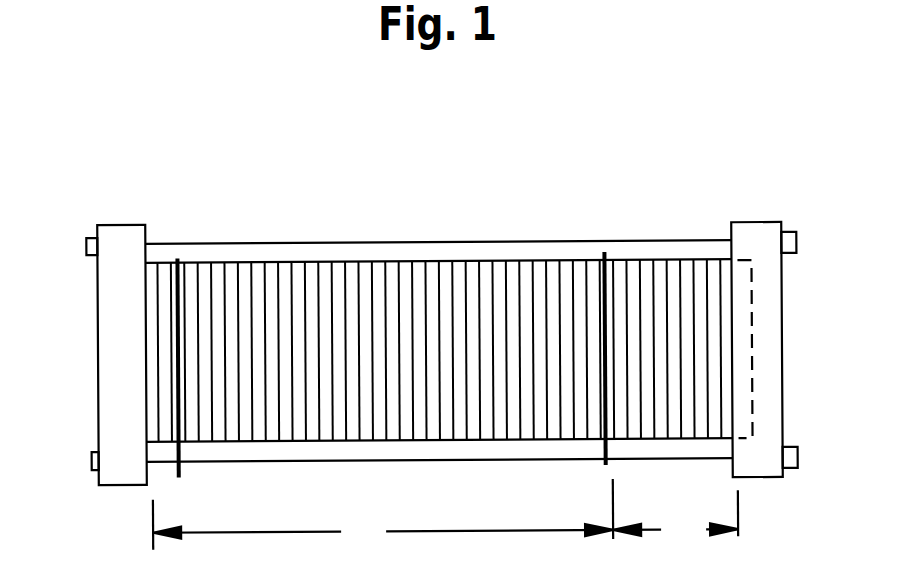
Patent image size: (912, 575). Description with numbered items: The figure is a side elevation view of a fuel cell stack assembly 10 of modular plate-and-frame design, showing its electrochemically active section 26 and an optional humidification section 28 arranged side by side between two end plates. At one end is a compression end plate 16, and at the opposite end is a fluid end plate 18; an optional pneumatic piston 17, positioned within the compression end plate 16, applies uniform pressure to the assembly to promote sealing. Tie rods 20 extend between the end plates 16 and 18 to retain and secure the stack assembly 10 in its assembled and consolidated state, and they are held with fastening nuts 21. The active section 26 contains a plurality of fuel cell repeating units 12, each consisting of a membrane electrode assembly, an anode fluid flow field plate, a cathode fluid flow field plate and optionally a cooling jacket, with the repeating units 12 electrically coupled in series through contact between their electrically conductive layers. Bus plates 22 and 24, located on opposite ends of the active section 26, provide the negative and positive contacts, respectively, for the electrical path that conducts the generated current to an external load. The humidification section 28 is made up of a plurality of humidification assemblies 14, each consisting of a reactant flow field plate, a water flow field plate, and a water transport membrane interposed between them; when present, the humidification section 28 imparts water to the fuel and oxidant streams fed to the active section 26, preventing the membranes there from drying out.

The fuel cell stack assembly 10 is at (600, 183).
The fuel cell repeating units 12 is at (222, 262).
The humidification assemblies 14 is at (649, 265).
The compression end plate 16 is at (758, 228).
The pneumatic piston 17 is at (745, 363).
The fluid end plate 18 is at (127, 238).
The tie rods 20 is at (460, 243).
The fastening nuts 21 is at (87, 250).
The bus plate 22 is at (178, 474).
The bus plate 24 is at (607, 465).
The electrochemically active section 26 is at (383, 514).
The humidification section 28 is at (675, 518).